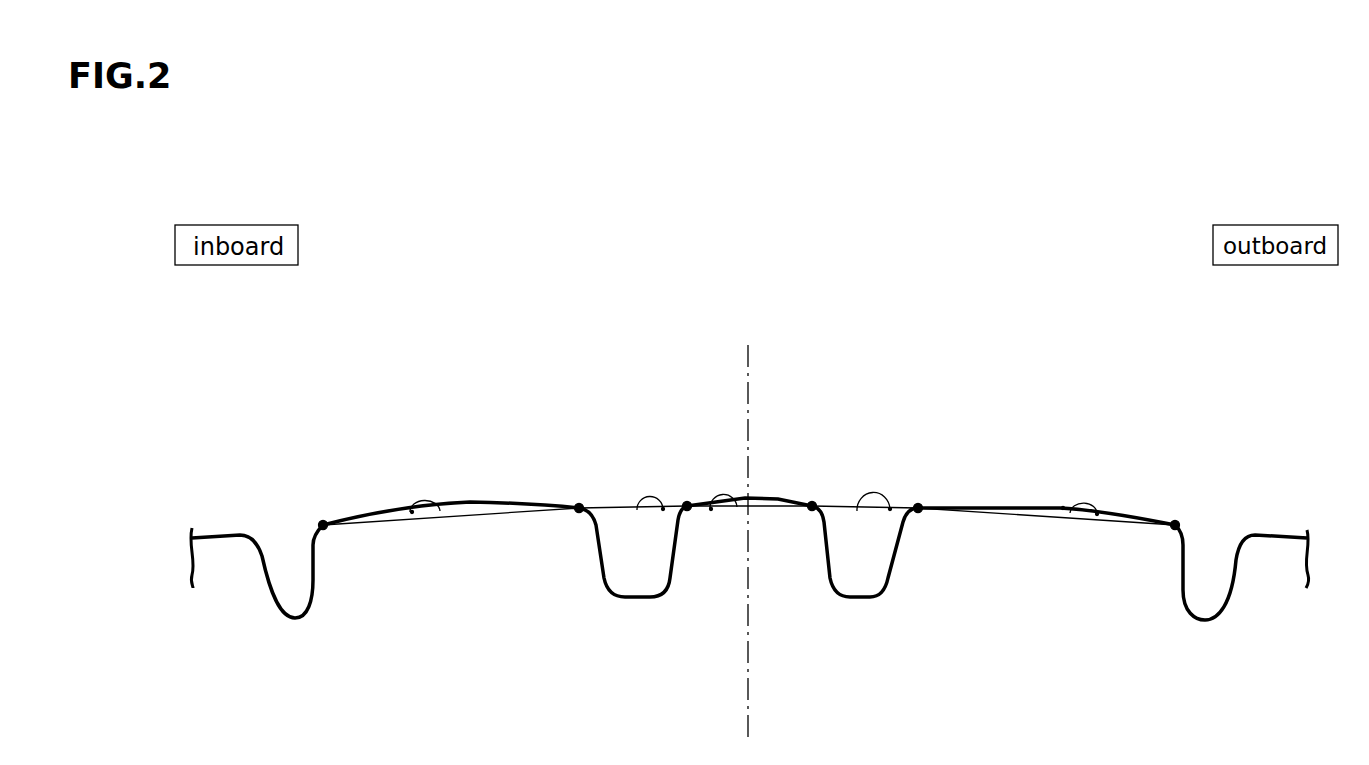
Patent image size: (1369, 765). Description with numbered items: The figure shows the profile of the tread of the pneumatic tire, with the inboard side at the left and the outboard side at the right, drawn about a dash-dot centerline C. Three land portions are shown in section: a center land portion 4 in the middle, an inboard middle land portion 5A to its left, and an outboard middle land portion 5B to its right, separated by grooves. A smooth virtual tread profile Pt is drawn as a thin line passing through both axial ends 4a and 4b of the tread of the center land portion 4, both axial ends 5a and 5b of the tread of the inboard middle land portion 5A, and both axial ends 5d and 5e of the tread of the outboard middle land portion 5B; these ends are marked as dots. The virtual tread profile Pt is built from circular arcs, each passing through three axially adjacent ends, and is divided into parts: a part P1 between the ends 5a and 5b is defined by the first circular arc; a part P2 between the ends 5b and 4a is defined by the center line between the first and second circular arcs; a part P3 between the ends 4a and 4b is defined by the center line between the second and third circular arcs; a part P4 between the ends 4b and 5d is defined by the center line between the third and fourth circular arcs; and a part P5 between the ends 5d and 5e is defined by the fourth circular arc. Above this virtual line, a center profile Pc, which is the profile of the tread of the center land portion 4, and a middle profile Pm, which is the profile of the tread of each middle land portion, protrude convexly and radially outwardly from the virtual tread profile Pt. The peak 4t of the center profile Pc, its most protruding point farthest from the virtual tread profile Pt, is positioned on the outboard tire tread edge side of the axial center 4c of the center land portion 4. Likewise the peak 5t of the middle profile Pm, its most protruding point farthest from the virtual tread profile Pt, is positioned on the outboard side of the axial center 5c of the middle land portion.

The center land portion 4 is at (782, 390).
The axial end of the tread of the center land portion 4a is at (687, 506).
The axial end of the tread of the center land portion 4b is at (814, 506).
The axial center of the center land portion 4c is at (742, 498).
The peak of the center profile 4t is at (776, 499).
The inboard middle land portion 5A is at (465, 420).
The outboard middle land portion 5B is at (1047, 393).
The axial end of the tread of the inboard middle land portion 5a is at (323, 525).
The axial end of the tread of the inboard middle land portion 5b is at (579, 508).
The axial center of the middle land portion 5c is at (1063, 507).
The axial end of the tread of the outboard middle land portion 5d is at (920, 508).
The axial end of the tread of the outboard middle land portion 5e is at (1177, 524).
The peak of the middle profile 5t is at (506, 505).
The middle profile Pm is at (466, 505).
The virtual tread profile Pt is at (631, 505).
The center profile Pc is at (808, 505).
The part of the virtual tread profile between the ends 5a and 5b P1 is at (412, 512).
The part of the virtual tread profile between the ends 5b and 4a P2 is at (663, 509).
The part of the virtual tread profile between the ends 4a and 4b P3 is at (711, 509).
The part of the virtual tread profile between the ends 4b and 5d P4 is at (890, 509).
The part of the virtual tread profile between the ends 5d and 5e P5 is at (1097, 514).
The tire equator C is at (747, 528).